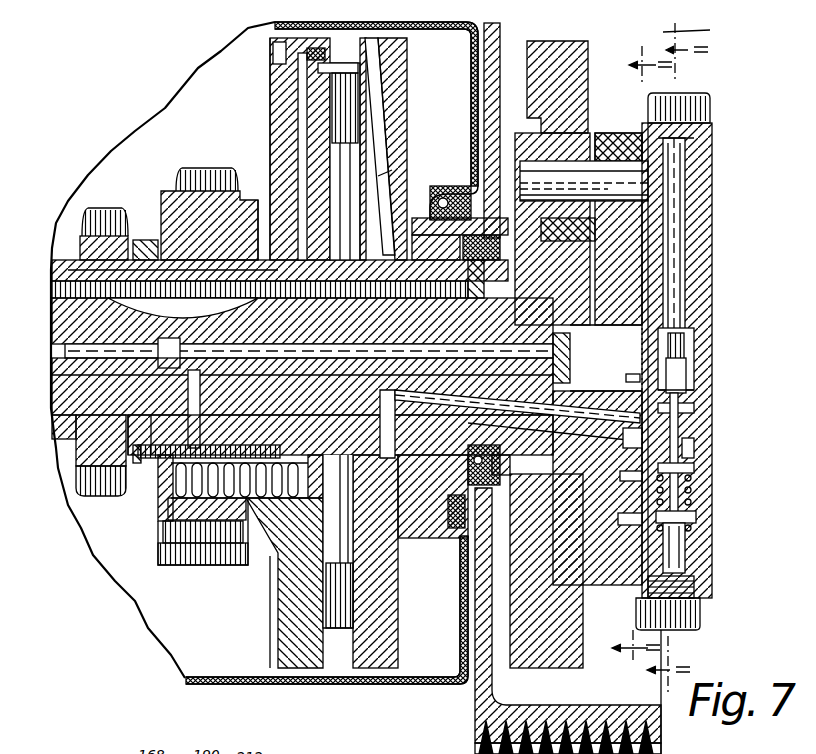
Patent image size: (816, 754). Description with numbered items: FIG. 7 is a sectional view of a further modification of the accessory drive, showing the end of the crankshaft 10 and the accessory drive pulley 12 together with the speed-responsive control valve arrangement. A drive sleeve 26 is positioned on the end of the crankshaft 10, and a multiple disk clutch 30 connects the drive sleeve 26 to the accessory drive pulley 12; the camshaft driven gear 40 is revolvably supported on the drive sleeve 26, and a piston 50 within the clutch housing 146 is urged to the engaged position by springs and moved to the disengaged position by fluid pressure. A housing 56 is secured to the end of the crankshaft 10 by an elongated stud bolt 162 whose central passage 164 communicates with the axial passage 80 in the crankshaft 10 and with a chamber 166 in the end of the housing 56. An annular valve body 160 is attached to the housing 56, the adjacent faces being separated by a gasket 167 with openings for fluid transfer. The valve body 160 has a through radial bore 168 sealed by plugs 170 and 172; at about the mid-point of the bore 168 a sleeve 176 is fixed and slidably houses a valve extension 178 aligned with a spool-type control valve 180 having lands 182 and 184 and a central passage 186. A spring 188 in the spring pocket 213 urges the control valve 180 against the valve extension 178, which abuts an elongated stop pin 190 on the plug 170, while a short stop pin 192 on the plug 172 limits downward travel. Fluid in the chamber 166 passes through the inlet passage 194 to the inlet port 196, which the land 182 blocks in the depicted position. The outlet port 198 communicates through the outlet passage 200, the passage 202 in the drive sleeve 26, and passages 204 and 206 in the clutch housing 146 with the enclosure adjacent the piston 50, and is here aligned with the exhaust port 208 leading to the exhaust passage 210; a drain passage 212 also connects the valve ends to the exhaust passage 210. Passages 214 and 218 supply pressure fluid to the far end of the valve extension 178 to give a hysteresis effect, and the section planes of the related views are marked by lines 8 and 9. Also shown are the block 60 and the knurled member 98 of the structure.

The crankshaft 10 is at (60, 306).
The knurled ring 98 is at (100, 210).
The camshaft driven gear 40 is at (200, 165).
The piston 50 is at (264, 92).
The multiple disk clutch 30 is at (332, 181).
The passage in clutch housing 204 is at (375, 120).
The clutch housing 146 is at (392, 80).
The passage in clutch housing 206 is at (372, 166).
The central passage 164 is at (262, 336).
The axial passage 80 is at (57, 344).
The drive sleeve 26 is at (146, 432).
The mounting block 60 is at (566, 98).
The housing 56 is at (606, 125).
The stud bolt 162 is at (580, 348).
The chamber 166 is at (583, 322).
The inlet passage 194 is at (618, 370).
The passage in drive sleeve 202 is at (372, 400).
The outlet passage 200 is at (517, 419).
The exhaust passage 210 is at (518, 420).
The outlet port 198 is at (628, 436).
The inlet port 196 is at (626, 468).
The drain passage 212 is at (630, 502).
The annular valve body 160 is at (704, 304).
The elongated stop pin 190 is at (685, 182).
The plug 170 is at (703, 98).
The plug 172 is at (700, 606).
The radial bore 168 is at (702, 276).
The passage 218 is at (690, 316).
The sleeve 176 is at (688, 340).
The valve extension 178 is at (678, 368).
The land 184 is at (700, 384).
The exhaust port 208 is at (686, 400).
The control valve 180 is at (672, 424).
The passage 214 is at (688, 442).
The land 182 is at (686, 462).
The central passage 186 is at (686, 488).
The spring pocket 213 is at (686, 508).
The spring 188 is at (686, 526).
The short stop pin 192 is at (680, 552).
The gasket 167 is at (632, 264).
The accessory drive pulley 12 is at (696, 31).
The section line 8- 8 is at (665, 359).
The section line 9- 9 is at (631, 357).